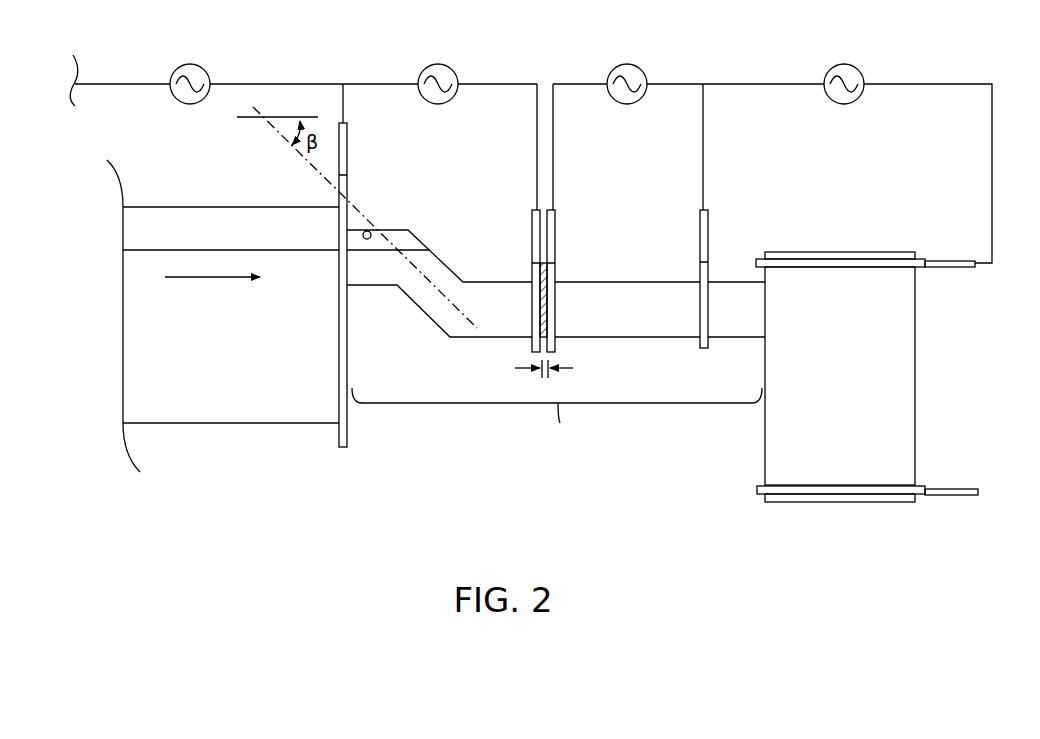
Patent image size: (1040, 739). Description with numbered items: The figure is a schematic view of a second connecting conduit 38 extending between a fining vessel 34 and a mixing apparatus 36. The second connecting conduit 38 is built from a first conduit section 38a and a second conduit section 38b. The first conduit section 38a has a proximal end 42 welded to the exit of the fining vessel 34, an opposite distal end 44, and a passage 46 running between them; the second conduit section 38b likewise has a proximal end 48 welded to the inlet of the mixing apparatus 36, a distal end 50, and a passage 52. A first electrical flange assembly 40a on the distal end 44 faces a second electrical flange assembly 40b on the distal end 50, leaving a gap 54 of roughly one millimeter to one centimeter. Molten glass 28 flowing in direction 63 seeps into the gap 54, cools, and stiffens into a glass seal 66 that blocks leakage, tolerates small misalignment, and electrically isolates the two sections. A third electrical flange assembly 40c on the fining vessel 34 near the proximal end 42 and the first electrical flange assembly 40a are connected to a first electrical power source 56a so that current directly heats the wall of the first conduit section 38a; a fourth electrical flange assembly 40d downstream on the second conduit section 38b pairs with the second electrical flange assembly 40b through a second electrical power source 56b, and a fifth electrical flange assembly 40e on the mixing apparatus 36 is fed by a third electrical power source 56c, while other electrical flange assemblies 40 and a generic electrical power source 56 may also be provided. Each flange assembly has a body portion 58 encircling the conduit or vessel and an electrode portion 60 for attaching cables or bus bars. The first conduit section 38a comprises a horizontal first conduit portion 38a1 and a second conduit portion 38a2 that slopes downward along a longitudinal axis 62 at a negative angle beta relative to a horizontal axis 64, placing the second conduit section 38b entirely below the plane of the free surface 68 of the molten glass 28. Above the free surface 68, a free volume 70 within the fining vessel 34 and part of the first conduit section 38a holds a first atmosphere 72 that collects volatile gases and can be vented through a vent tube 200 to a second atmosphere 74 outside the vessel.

The molten glass 28 is at (229, 352).
The fining vessel 34 is at (178, 207).
The mixing apparatus 36 is at (920, 362).
The second connecting conduit 38 is at (557, 418).
The first conduit section 38a is at (439, 278).
The first conduit portion 38a1 is at (378, 222).
The second conduit portion 38a2 is at (432, 323).
The second conduit section 38b is at (646, 263).
The electrical flange assemblies 40 is at (932, 472).
The first electrical flange assembly 40a is at (519, 236).
The second electrical flange assembly 40b is at (592, 210).
The third electrical flange assembly 40c is at (377, 166).
The fourth electrical flange assembly 40d is at (742, 235).
The fifth electrical flange assembly 40e is at (930, 240).
The proximal end 42 is at (357, 287).
The distal end 44 is at (530, 282).
The passage 46 is at (445, 273).
The proximal end 48 is at (755, 337).
The distal end 50 is at (568, 282).
The passage 52 is at (663, 288).
The gap 54 is at (547, 378).
The electrical power source 56 is at (204, 70).
The first electrical power source 56a is at (452, 70).
The second electrical power source 56b is at (641, 70).
The third electrical power source 56c is at (858, 70).
The body portion 58 is at (347, 440).
The electrode portion 60 is at (347, 157).
The longitudinal axis 62 is at (319, 174).
The direction 63 is at (208, 280).
The horizontal axis 64 is at (245, 120).
The glass seal 66 is at (548, 322).
The free surface 68 is at (271, 250).
The free volume 70 is at (206, 237).
The first atmosphere 72 is at (140, 228).
The second atmosphere 74 is at (113, 119).
The vent tube 200 is at (369, 240).